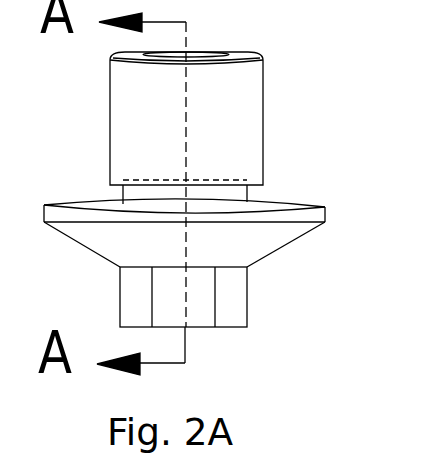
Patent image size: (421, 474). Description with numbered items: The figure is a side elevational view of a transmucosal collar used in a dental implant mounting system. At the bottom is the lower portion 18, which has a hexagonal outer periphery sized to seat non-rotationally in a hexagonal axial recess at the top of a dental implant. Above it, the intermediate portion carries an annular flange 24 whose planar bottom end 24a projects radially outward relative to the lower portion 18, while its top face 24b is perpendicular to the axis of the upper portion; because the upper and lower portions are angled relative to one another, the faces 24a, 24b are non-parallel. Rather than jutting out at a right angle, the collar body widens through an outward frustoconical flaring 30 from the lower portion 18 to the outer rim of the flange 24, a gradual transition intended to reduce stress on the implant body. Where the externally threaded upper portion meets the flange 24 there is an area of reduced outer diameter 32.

The lower portion 18 is at (240, 315).
The annular flange 24 is at (318, 217).
The planar bottom end of the annular flange 24a is at (305, 225).
The top face of the annular flange 24b is at (265, 205).
The outward frustoconical flaring 30 is at (266, 242).
The area of reduced outer diameter 32 is at (135, 193).